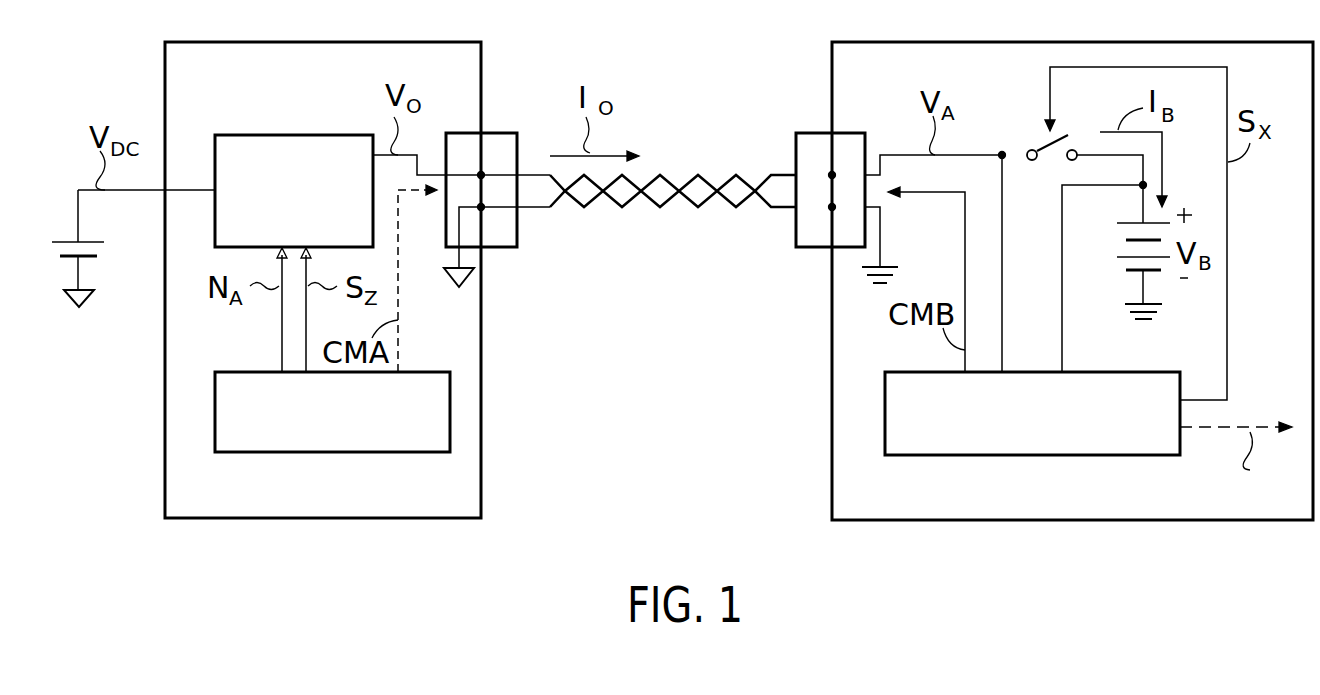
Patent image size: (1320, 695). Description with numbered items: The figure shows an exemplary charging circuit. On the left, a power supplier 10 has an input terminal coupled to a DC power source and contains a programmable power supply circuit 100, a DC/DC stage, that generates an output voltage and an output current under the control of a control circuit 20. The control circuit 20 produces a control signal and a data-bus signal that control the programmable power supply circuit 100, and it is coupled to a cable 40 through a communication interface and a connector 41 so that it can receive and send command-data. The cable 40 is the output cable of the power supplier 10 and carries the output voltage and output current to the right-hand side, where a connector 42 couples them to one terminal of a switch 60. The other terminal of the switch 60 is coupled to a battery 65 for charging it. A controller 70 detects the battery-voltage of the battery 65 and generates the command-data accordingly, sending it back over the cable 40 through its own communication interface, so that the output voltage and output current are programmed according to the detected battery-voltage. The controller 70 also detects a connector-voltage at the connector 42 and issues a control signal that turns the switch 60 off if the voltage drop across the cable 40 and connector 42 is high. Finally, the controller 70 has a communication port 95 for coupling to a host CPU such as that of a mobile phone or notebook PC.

The power supplier 10 is at (167, 42).
The programmable power supply circuit 100 is at (220, 135).
The control circuit 20 is at (220, 372).
The connector 41 is at (502, 133).
The cable 40 is at (675, 162).
The connector 42 is at (810, 132).
The switch 60 is at (1043, 130).
The battery 65 is at (1108, 250).
The controller 70 is at (1078, 372).
The communication port 95 is at (1242, 408).